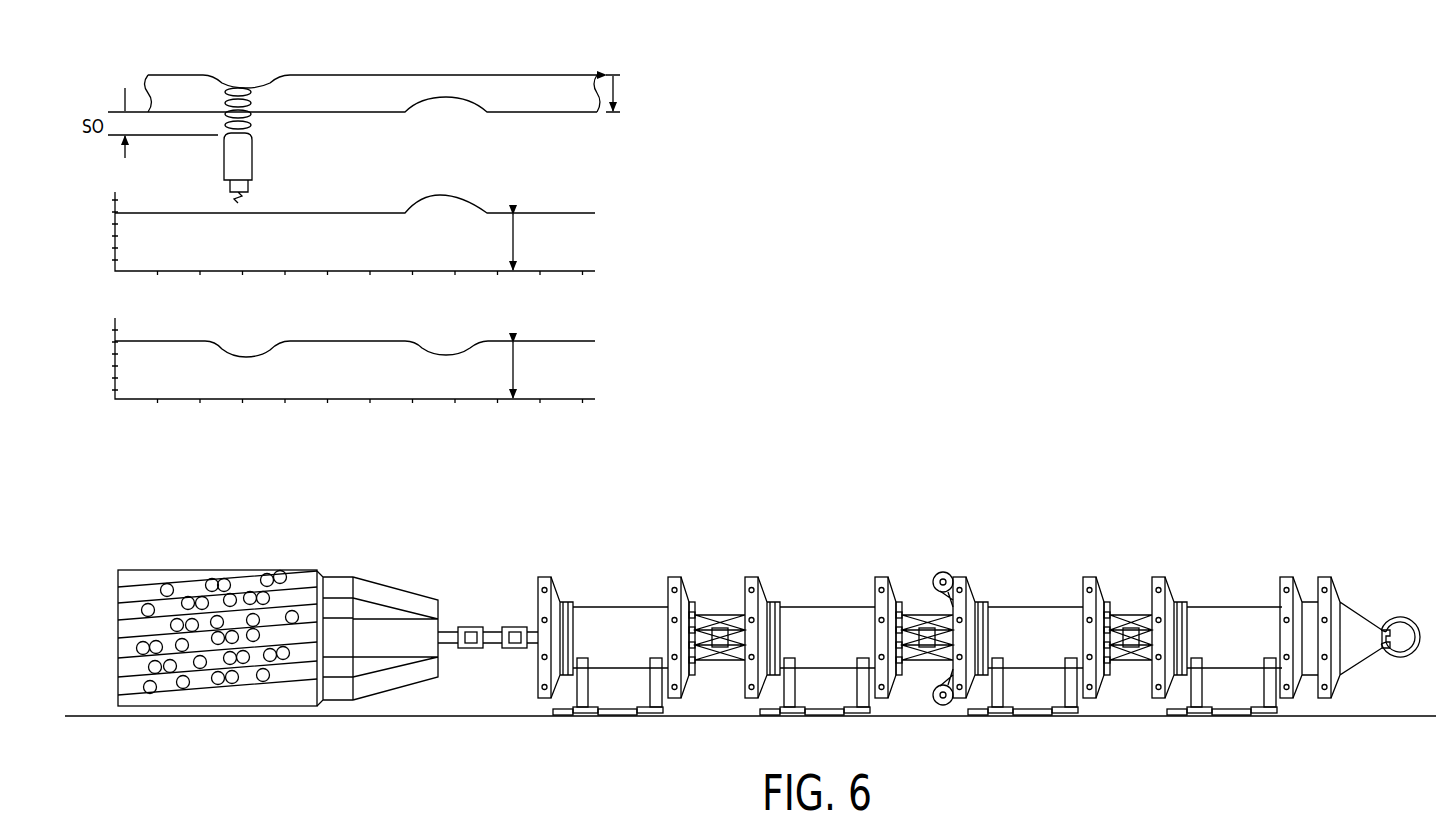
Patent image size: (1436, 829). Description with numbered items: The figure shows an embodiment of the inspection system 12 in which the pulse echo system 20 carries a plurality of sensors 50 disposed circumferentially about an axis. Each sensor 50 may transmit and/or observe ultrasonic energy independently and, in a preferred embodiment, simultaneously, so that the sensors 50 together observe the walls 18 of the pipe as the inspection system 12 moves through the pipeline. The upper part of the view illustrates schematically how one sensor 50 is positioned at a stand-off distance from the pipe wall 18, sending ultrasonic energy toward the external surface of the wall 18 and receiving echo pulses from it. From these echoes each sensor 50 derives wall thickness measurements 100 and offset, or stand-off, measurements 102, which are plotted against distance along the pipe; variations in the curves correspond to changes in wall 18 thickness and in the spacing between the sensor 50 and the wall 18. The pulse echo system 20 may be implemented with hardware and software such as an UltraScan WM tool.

The inspection system 12 is at (917, 537).
The walls 18 is at (362, 93).
The pulse echo system 20 is at (409, 692).
The sensors 50 is at (191, 594).
The wall thickness measurements 100 is at (687, 338).
The offset measurements 102 is at (648, 199).